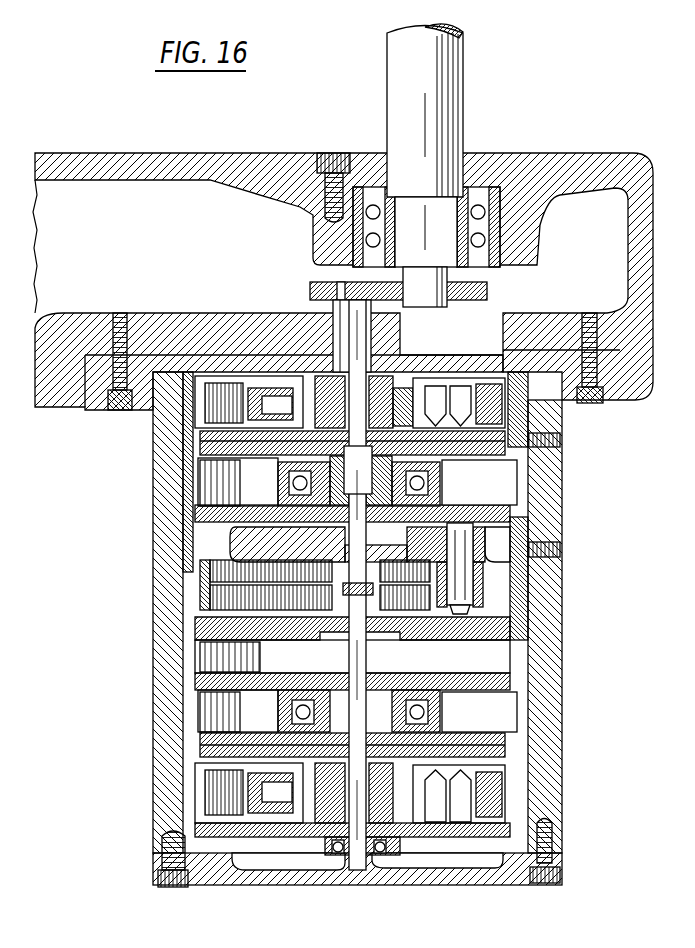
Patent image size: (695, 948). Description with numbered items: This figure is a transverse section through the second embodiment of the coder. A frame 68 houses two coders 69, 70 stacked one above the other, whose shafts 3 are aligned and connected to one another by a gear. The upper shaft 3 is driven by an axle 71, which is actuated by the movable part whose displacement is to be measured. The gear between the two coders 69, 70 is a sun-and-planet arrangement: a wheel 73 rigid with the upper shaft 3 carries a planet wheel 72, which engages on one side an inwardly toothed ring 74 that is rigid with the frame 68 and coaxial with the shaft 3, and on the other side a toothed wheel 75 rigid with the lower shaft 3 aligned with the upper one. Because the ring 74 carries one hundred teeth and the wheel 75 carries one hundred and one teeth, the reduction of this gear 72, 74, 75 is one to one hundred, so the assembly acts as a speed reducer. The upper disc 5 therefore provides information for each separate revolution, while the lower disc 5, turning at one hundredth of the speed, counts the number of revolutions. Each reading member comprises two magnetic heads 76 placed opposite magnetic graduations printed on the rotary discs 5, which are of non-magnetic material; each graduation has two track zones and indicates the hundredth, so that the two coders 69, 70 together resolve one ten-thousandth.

The shaft 3 is at (352, 467).
The rotary disc 5 is at (473, 440).
The frame 68 is at (557, 398).
The coder 69 is at (497, 478).
The coder 70 is at (493, 710).
The axle 71 is at (400, 165).
The planet wheel 72 is at (463, 580).
The wheel 73 is at (532, 536).
The inwardly toothed ring 74 is at (223, 575).
The toothed wheel 75 is at (223, 597).
The magnetic heads 76 is at (472, 393).